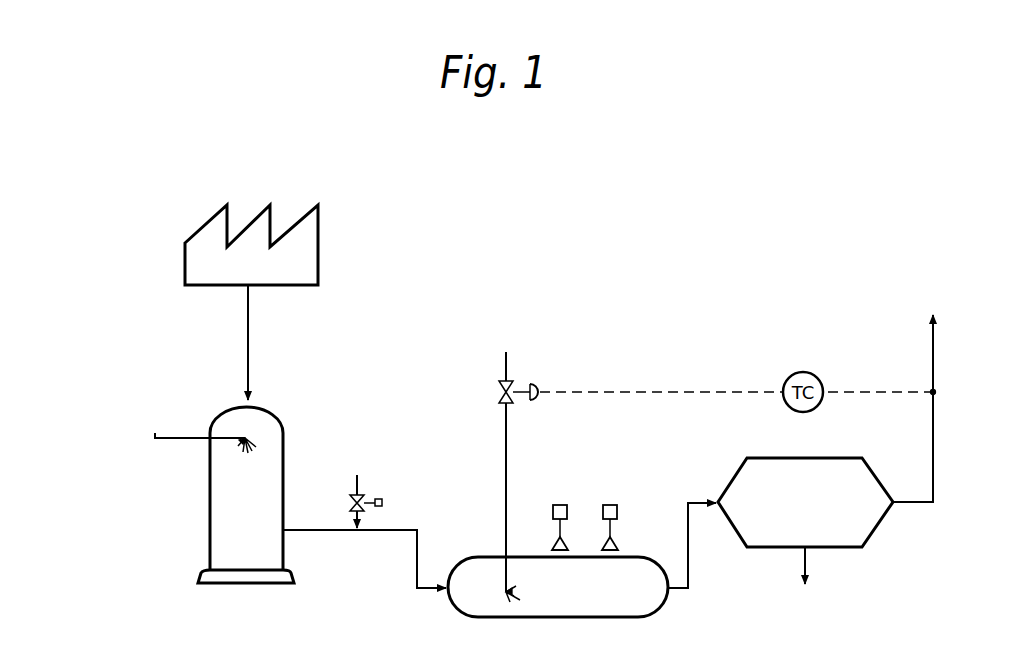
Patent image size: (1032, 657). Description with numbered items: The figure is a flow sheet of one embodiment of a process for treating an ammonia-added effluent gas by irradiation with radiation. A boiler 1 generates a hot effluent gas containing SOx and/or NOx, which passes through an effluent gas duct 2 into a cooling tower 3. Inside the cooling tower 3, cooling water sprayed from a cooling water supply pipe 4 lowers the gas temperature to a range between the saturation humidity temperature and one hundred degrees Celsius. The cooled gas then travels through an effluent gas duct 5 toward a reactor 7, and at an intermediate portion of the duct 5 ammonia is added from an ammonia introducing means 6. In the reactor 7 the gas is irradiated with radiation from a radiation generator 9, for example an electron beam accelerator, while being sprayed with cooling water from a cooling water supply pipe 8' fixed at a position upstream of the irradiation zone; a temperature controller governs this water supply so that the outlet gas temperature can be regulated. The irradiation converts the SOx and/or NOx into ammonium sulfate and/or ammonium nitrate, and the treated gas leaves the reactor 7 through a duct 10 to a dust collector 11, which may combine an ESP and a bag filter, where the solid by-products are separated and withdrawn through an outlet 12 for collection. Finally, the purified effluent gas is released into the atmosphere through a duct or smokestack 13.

The boiler 1 is at (320, 229).
The effluent gas duct 2 is at (247, 327).
The cooling tower 3 is at (209, 527).
The cooling water supply pipe 4 is at (170, 440).
The effluent gas duct 5 is at (333, 532).
The ammonia introducing means 6 is at (360, 480).
The reactor 7 is at (610, 618).
The cooling water supply pipe 8' is at (528, 463).
The radiation generator 9 is at (610, 503).
The duct to dust collector 10 is at (690, 545).
The dust collector 11 is at (864, 455).
The by-product discharge 12 is at (808, 566).
The duct or smokestack 13 is at (936, 350).